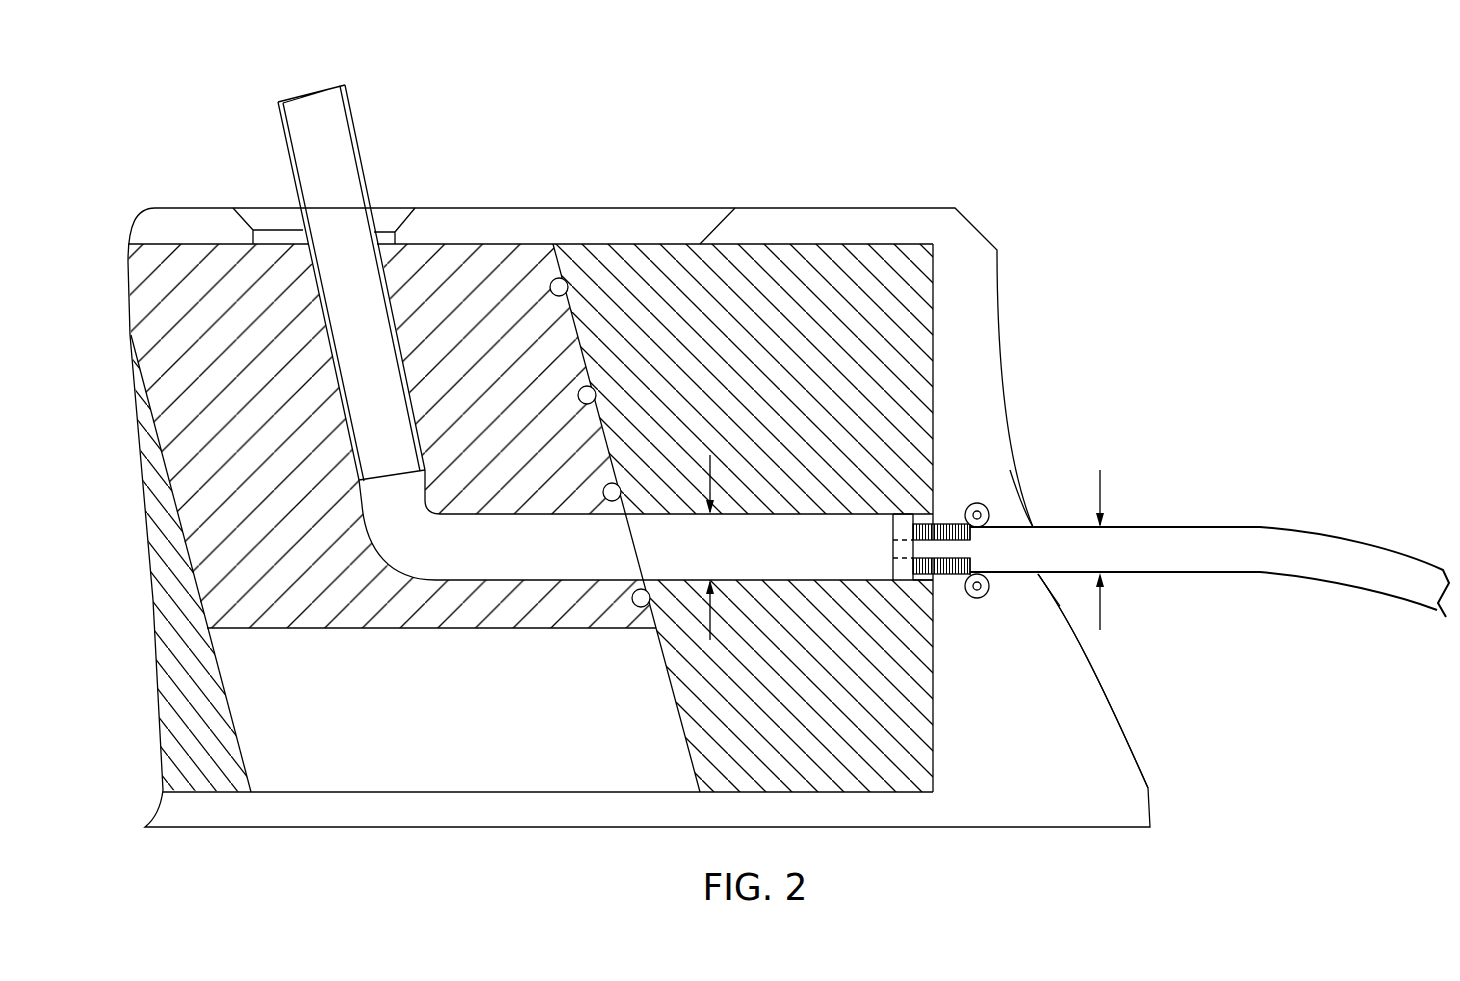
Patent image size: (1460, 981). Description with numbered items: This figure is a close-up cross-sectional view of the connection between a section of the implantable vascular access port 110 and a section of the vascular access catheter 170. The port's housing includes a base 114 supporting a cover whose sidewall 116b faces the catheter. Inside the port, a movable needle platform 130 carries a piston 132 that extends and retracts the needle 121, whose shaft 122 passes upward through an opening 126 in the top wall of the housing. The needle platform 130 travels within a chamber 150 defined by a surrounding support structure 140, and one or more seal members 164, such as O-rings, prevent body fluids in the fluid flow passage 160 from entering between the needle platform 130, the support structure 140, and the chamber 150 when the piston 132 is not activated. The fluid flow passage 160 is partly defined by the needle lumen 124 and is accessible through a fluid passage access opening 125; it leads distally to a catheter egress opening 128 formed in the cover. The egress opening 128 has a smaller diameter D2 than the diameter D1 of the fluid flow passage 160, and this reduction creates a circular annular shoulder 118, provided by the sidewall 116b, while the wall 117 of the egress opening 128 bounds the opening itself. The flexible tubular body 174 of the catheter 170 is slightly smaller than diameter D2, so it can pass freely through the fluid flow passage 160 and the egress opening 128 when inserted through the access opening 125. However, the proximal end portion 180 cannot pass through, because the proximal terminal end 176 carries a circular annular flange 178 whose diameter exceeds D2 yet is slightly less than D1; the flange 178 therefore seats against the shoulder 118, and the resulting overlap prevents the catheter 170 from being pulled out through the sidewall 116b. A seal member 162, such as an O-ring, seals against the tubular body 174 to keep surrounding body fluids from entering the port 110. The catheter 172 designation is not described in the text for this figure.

The vascular access port 110 is at (1070, 163).
The base 114 is at (382, 817).
The sidewall 116b is at (1023, 702).
The wall 117 is at (1035, 577).
The shoulder 118 is at (937, 582).
The needle 121 is at (422, 246).
The shaft 122 is at (365, 182).
The needle lumen 124 is at (317, 130).
The fluid passage access opening 125 is at (302, 95).
The opening 126 is at (258, 211).
The catheter egress opening 128 is at (1033, 525).
The needle platform 130 is at (232, 622).
The piston 132 is at (203, 334).
The support structure 140 is at (820, 265).
The chamber 150 is at (460, 782).
The fluid flow passage 160 is at (757, 528).
The seal member 162 is at (979, 511).
The seal members 164 is at (569, 288).
The vascular access catheter 170 is at (1372, 488).
The outlet tube 172 is at (1205, 547).
The tubular body 174 is at (1131, 576).
The proximal terminal end 176 is at (893, 547).
The flange 178 is at (904, 573).
The proximal end portion 180 is at (923, 498).
The diameter of the fluid flow passage D1 is at (706, 547).
The diameter of the catheter egress opening D2 is at (1096, 550).